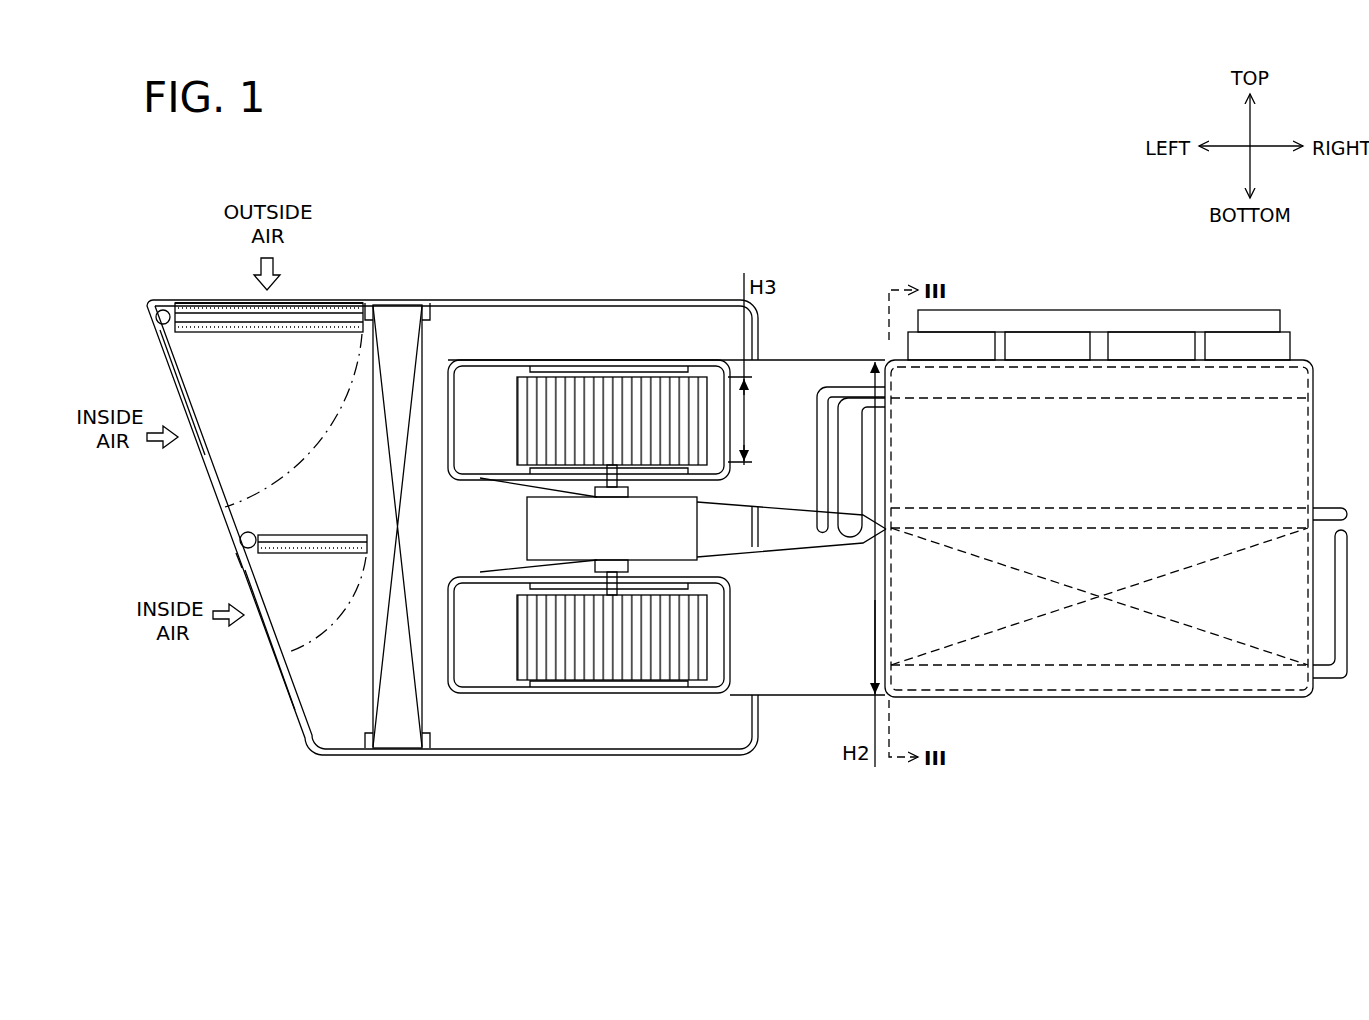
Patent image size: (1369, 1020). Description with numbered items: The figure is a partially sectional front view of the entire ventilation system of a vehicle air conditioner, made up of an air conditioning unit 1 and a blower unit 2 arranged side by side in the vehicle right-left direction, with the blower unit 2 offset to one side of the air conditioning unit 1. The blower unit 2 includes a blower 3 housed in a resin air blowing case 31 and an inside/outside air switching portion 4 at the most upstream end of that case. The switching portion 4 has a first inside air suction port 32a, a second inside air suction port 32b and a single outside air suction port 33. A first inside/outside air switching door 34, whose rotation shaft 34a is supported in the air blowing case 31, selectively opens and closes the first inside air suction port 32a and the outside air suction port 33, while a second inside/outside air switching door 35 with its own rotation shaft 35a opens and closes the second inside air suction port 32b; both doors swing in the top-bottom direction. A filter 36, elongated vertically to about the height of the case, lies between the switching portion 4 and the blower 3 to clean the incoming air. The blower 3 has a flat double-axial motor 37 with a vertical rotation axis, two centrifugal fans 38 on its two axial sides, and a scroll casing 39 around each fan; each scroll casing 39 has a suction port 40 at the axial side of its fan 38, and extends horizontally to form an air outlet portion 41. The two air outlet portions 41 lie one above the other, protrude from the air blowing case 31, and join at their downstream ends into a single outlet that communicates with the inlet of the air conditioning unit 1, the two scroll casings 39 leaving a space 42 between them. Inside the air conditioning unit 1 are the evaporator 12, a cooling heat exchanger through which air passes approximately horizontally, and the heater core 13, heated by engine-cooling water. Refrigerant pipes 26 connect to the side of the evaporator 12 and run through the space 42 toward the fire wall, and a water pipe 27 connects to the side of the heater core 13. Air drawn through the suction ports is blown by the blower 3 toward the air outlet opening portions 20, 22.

The air conditioning unit 1 is at (1090, 456).
The blower unit 2 is at (600, 240).
The blower 3 is at (593, 514).
The inside/outside air switching portion 4 is at (330, 240).
The evaporator 12 is at (1295, 385).
The heater core 13 is at (1106, 650).
The air outlet opening portion 20 is at (1098, 326).
The air outlet opening portion 22 is at (1035, 340).
The refrigerant pipes 26 is at (822, 400).
The water pipe 27 is at (1335, 512).
The air blowing case 31 is at (660, 300).
The first inside air suction port 32a is at (202, 468).
The second inside air suction port 32b is at (262, 632).
The outside air suction port 33 is at (322, 300).
The first inside/outside air switching door 34 is at (210, 312).
The rotation shaft 34a is at (162, 306).
The second inside/outside air switching door 35 is at (245, 532).
The rotation shaft 35a is at (238, 558).
The filter 36 is at (397, 330).
The double-axial motor 37 is at (567, 508).
The centrifugal fan 38 is at (612, 383).
The scroll casing 39 is at (492, 360).
The suction port 40 is at (670, 473).
The air outlet portion 41 is at (867, 463).
The space 42 is at (790, 535).